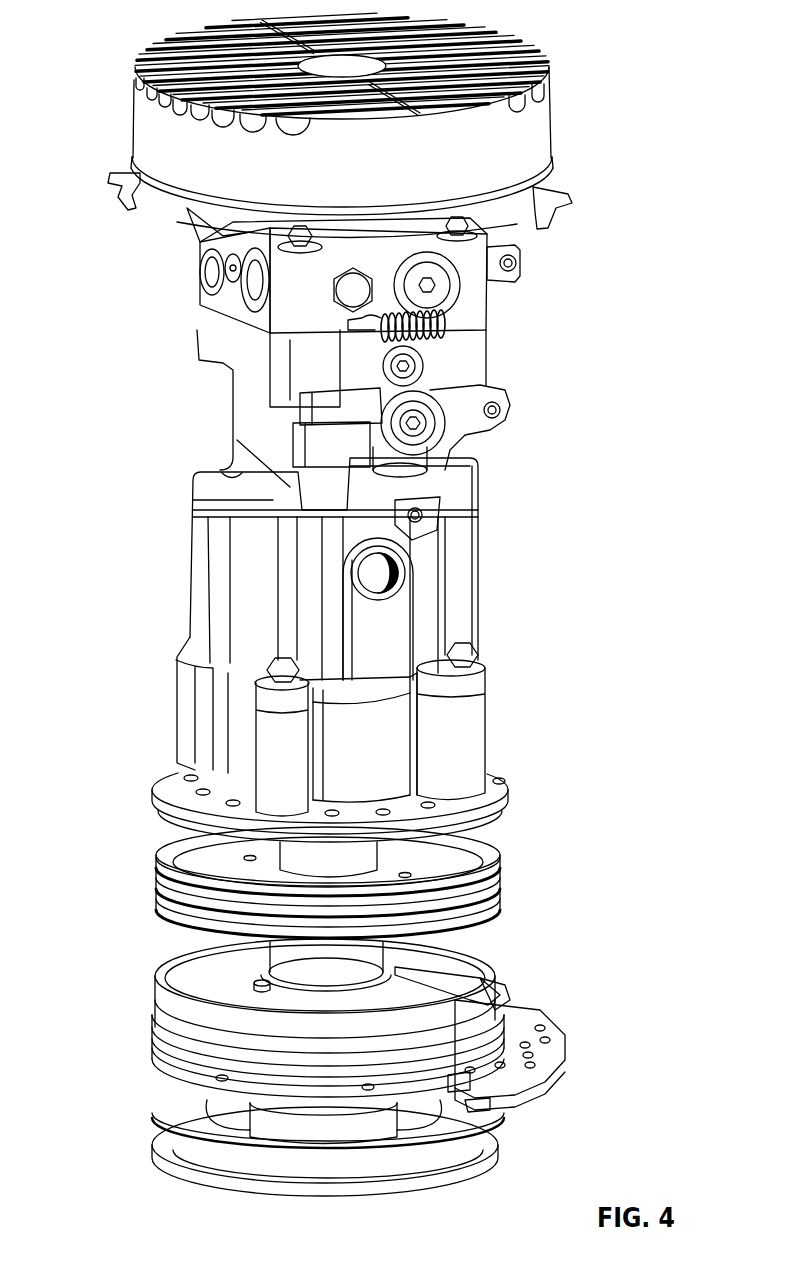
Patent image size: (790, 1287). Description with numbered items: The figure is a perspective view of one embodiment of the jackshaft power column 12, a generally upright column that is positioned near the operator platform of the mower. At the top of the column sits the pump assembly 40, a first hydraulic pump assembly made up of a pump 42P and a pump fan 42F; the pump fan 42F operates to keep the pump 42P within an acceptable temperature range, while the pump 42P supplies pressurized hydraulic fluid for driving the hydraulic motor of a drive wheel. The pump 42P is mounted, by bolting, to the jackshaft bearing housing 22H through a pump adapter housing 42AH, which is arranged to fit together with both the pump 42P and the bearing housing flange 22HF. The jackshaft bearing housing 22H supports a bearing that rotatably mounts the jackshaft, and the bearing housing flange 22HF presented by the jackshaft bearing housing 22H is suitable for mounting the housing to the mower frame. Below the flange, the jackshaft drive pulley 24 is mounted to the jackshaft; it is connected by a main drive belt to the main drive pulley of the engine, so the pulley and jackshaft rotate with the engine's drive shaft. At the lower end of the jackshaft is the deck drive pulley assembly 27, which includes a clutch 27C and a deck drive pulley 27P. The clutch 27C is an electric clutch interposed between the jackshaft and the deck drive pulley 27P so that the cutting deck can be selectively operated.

The jackshaft power column 12 is at (104, 15).
The pump assembly 40 is at (599, 15).
The pump fan 42F is at (365, 173).
The pump 42P is at (470, 258).
The pump adapter housing 42AH is at (465, 518).
The jackshaft bearing housing 22H is at (475, 723).
The bearing housing flange 22HF is at (495, 778).
The jackshaft drive pulley 24 is at (500, 860).
The deck drive pulley assembly 27 is at (670, 937).
The clutch 27C is at (447, 1035).
The deck drive pulley 27P is at (487, 1165).